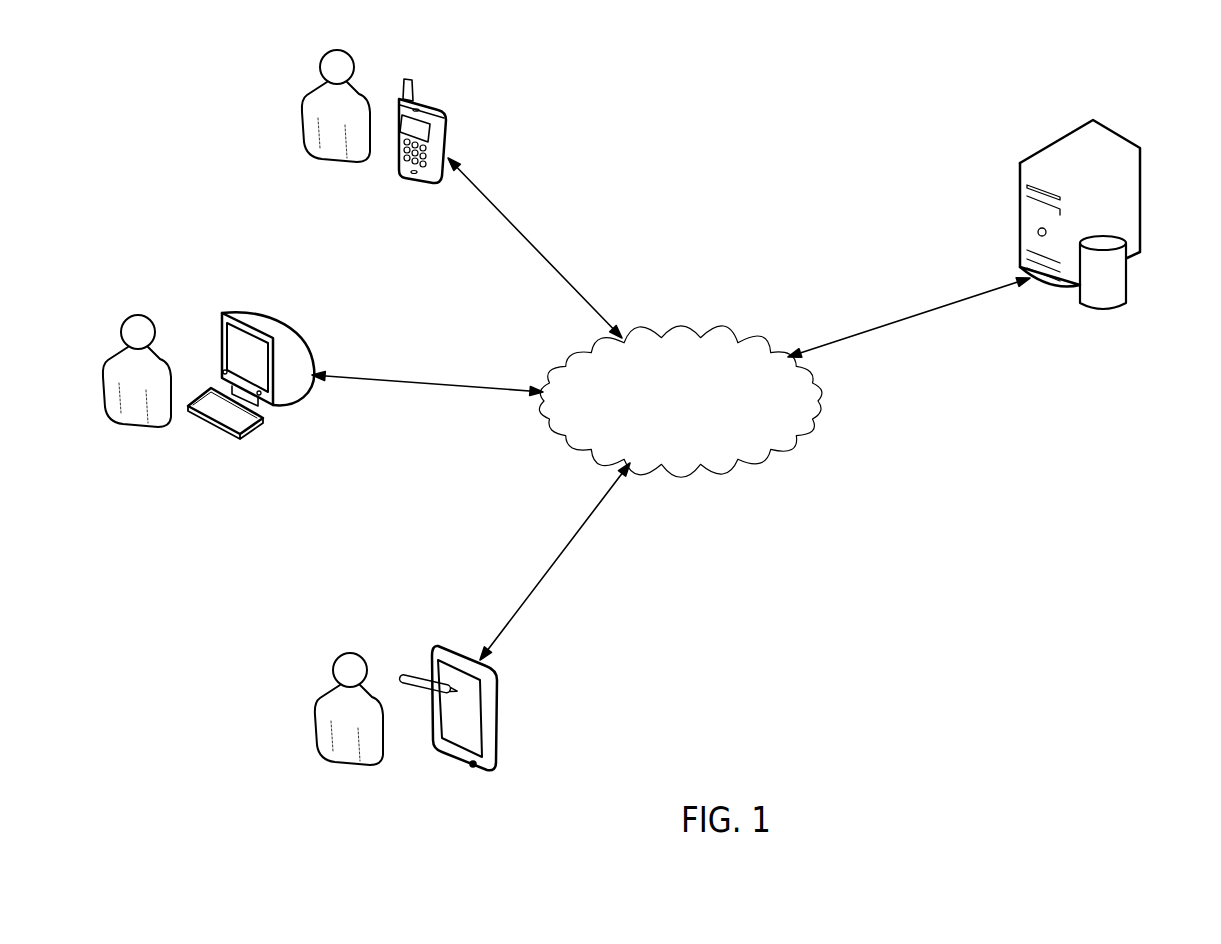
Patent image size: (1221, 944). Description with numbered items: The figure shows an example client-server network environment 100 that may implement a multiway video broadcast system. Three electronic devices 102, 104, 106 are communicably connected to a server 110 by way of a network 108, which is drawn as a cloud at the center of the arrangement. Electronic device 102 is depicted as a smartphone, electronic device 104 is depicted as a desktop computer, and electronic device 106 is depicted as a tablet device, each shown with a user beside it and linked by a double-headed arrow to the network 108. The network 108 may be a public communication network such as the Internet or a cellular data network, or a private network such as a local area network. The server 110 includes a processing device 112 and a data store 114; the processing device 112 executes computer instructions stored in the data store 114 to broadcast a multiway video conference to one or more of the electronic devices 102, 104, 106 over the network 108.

The network environment 100 is at (803, 90).
The electronic device 102 is at (434, 103).
The electronic device 104 is at (274, 322).
The electronic device 106 is at (443, 647).
The network 108 is at (679, 333).
The server 110 is at (1019, 320).
The processing device 112 is at (1117, 128).
The data store 114 is at (1128, 292).